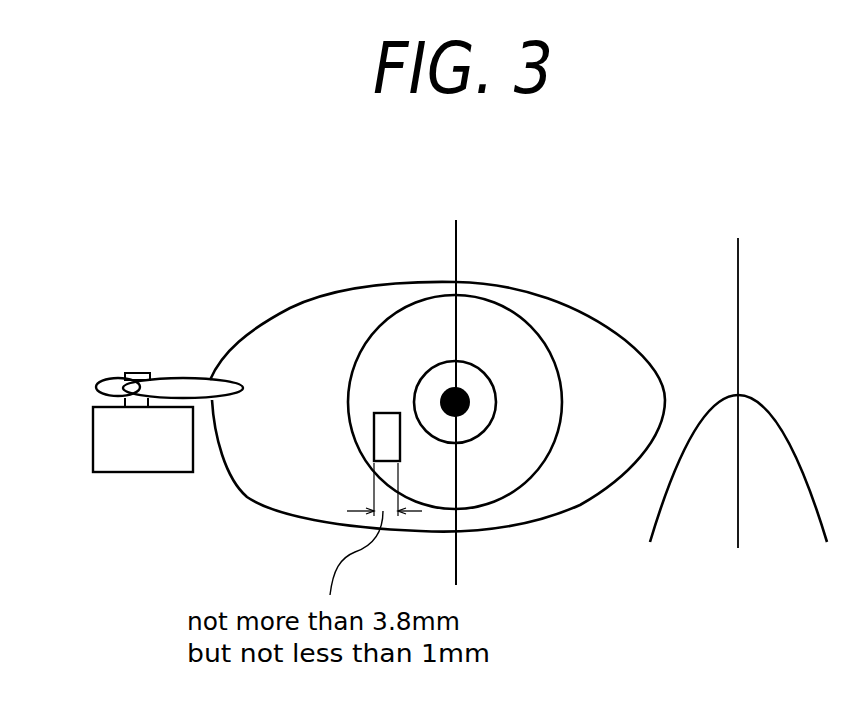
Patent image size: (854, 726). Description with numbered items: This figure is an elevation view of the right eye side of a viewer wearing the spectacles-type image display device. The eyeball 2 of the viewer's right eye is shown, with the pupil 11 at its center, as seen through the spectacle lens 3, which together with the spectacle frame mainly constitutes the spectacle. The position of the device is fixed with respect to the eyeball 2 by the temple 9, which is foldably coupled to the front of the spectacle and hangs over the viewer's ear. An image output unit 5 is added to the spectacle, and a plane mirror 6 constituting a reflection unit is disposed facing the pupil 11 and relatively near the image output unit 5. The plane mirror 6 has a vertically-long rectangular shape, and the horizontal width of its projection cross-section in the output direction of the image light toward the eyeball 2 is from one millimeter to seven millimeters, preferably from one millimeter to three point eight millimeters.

The eyeball 2 is at (477, 310).
The spectacle lens 3 is at (547, 522).
The image output unit 5 is at (130, 463).
The plane mirror 6 is at (380, 422).
The temple 9 is at (102, 389).
The pupil 11 is at (470, 387).